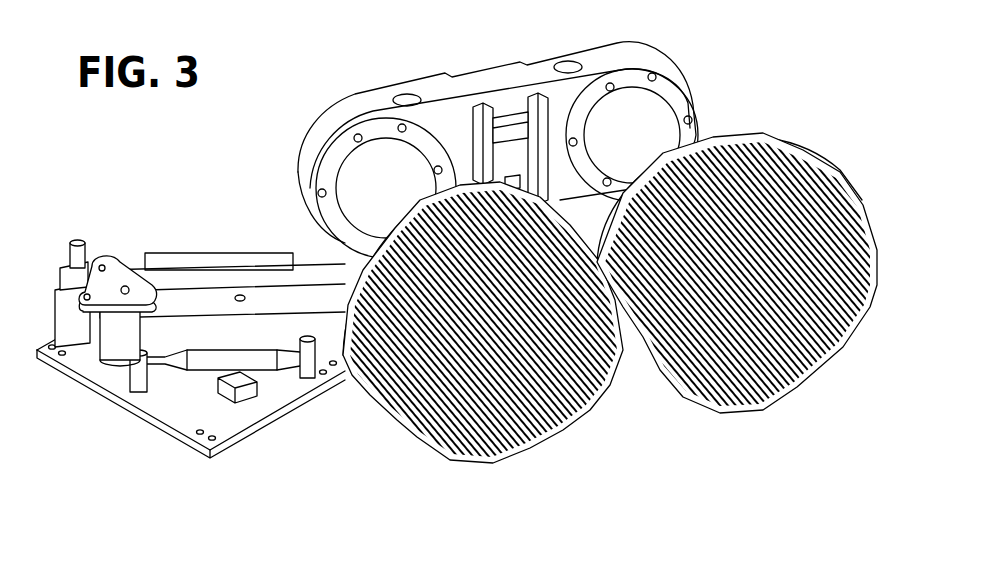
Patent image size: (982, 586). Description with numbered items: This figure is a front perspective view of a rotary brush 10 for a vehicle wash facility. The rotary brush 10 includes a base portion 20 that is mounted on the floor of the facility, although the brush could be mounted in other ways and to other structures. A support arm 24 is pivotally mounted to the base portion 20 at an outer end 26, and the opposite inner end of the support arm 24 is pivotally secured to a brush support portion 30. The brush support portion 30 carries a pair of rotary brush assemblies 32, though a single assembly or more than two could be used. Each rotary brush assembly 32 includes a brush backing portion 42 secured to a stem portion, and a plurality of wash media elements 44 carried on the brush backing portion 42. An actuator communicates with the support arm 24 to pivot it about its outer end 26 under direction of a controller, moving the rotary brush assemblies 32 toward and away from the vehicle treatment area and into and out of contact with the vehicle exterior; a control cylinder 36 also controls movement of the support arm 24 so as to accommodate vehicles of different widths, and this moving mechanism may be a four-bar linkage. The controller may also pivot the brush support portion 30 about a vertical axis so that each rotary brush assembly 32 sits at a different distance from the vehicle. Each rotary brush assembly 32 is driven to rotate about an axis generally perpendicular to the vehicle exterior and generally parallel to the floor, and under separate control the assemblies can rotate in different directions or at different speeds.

The rotary brush 10 is at (459, 40).
The base portion 20 is at (242, 423).
The support arm 24 is at (193, 300).
The outer end 26 is at (110, 333).
The brush support portion 30 is at (648, 51).
The rotary brush assembly 32 is at (601, 254).
The control cylinder 36 is at (250, 364).
The brush backing portion 42 is at (378, 117).
The wash media elements 44 is at (570, 420).